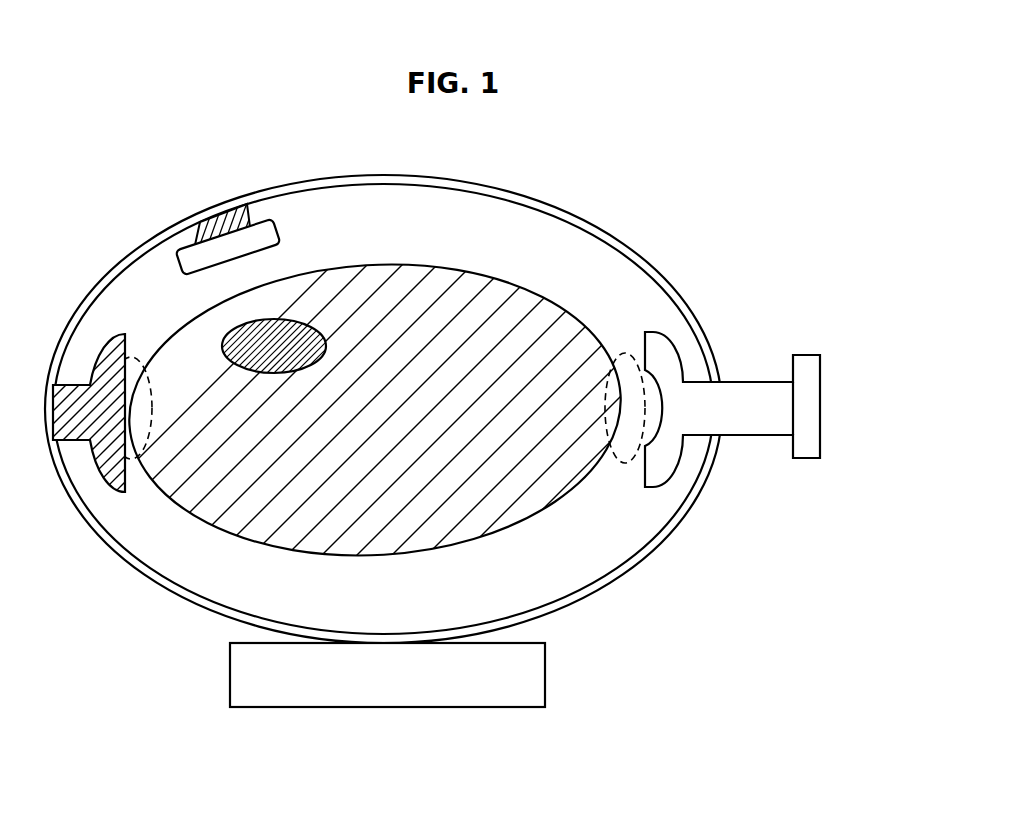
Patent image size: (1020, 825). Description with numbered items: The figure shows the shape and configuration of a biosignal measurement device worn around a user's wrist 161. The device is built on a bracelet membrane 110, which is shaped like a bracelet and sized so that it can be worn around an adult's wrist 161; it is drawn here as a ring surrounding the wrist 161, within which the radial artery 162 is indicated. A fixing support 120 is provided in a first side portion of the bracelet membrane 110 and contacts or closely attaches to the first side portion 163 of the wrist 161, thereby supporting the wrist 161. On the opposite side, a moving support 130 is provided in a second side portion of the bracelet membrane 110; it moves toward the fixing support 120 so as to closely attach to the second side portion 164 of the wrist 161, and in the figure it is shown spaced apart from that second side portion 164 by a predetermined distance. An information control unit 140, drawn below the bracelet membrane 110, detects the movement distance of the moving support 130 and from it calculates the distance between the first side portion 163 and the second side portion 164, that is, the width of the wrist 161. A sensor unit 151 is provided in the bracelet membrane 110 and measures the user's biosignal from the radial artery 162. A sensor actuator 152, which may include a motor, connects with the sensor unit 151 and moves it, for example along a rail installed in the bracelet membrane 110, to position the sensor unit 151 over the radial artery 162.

The bracelet membrane 110 is at (203, 610).
The fixing support 120 is at (78, 432).
The moving support 130 is at (807, 408).
The information control unit 140 is at (387, 675).
The sensor unit 151 is at (282, 230).
The sensor actuator 152 is at (215, 230).
The wrist 161 is at (503, 410).
The radial artery 162 is at (305, 336).
The first side portion 163 is at (134, 468).
The second side portion 164 is at (622, 470).